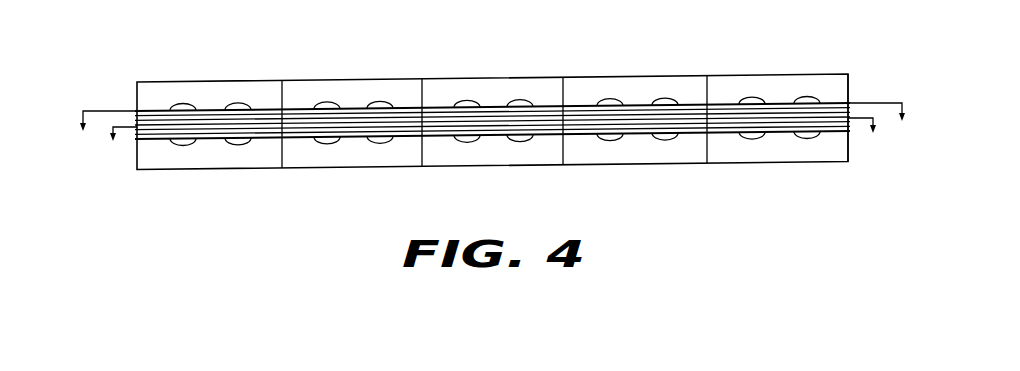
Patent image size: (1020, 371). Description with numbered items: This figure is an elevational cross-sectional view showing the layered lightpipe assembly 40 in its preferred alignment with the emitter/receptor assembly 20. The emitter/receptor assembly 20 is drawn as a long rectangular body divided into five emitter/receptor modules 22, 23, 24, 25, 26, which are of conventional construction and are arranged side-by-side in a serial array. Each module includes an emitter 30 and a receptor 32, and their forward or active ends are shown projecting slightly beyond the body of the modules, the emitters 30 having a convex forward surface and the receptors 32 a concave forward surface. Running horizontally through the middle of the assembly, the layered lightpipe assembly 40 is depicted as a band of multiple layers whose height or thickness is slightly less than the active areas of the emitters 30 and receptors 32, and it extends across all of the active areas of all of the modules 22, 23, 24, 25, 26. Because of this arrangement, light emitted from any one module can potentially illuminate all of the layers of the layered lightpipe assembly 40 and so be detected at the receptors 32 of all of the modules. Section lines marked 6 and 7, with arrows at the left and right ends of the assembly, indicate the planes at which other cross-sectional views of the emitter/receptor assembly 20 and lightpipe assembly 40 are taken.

The emitter/receptor assembly 20 is at (138, 76).
The emitter/receptor module 22 is at (208, 85).
The emitter/receptor module 23 is at (348, 85).
The emitter/receptor module 24 is at (484, 83).
The emitter/receptor module 25 is at (631, 83).
The emitter/receptor module 26 is at (779, 80).
The emitter 30 is at (183, 146).
The receptor 32 is at (238, 145).
The layered lightpipe assembly 40 is at (268, 110).
The section line 6- 6 is at (492, 140).
The section line 7- 7 is at (493, 128).